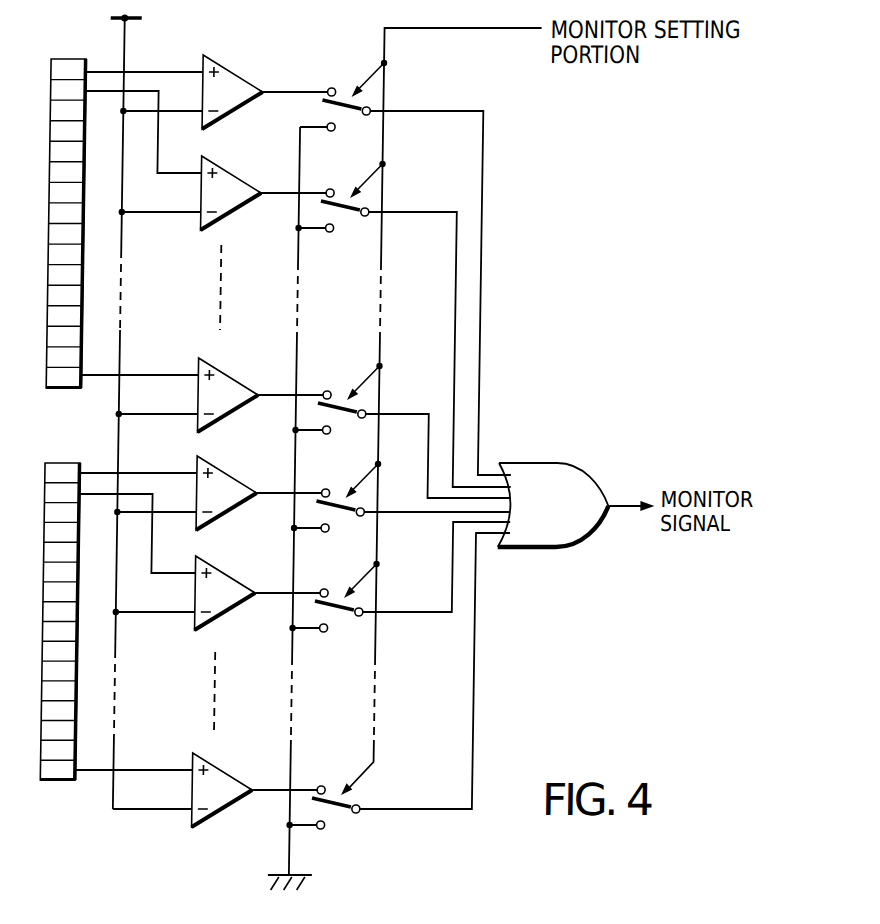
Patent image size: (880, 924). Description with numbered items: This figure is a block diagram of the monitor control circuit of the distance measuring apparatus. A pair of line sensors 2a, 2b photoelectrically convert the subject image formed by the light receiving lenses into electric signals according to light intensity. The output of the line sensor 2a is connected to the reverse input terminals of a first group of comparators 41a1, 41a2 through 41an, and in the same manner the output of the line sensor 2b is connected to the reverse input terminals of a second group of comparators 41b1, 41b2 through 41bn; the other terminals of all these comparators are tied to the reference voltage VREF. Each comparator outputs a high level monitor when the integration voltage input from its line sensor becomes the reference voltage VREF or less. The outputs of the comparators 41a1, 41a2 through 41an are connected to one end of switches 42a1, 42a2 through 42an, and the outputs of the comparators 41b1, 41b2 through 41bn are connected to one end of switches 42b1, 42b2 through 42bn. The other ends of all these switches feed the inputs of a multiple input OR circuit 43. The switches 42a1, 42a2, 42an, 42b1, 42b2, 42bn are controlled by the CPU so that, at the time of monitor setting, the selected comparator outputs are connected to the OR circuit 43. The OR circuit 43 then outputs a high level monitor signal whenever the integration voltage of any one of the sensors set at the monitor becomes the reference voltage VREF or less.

The line sensor 2a is at (66, 203).
The line sensor 2b is at (60, 599).
The comparator 41a1 is at (241, 82).
The comparator 41a2 is at (239, 209).
The comparator 41an is at (237, 385).
The comparator 41b1 is at (236, 484).
The comparator 41b2 is at (233, 605).
The comparator 41bn is at (230, 781).
The switch 42a1 is at (343, 88).
The switch 42a2 is at (342, 213).
The switch 42an is at (338, 391).
The switch 42b1 is at (337, 490).
The switch 42b2 is at (336, 611).
The switch 42bn is at (328, 786).
The multiple input OR circuit 43 is at (554, 485).